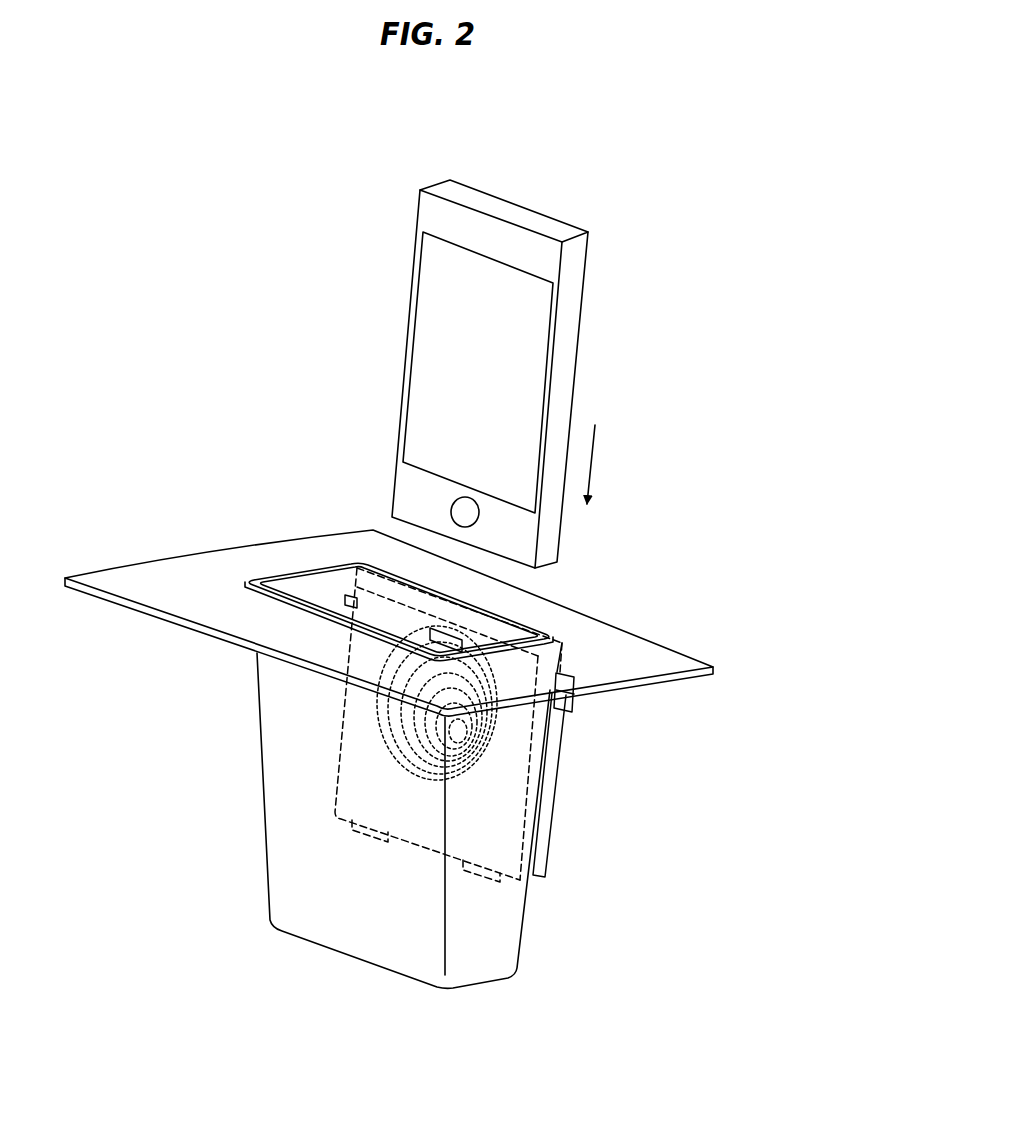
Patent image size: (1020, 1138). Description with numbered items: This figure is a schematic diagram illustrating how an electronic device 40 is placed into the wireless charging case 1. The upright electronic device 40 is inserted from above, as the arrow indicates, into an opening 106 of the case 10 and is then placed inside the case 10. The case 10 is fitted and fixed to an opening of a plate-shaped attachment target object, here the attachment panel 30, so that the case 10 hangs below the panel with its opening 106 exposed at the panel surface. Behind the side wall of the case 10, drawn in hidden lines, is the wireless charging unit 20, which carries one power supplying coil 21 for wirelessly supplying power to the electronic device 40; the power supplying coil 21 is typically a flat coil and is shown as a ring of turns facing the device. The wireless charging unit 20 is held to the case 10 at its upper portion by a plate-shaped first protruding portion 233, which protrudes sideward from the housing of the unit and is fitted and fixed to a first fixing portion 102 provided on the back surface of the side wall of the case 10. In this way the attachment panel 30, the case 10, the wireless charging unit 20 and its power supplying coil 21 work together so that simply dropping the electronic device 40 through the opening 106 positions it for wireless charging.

The wireless charging case 1 is at (258, 505).
The case 10 is at (268, 747).
The wireless charging unit 20 is at (560, 782).
The power supplying coil 21 is at (472, 763).
The attachment panel 30 is at (640, 638).
The electronic device 40 is at (573, 310).
The first fixing portion 102 is at (543, 711).
The opening 106 is at (333, 562).
The first protruding portion 233 is at (572, 703).